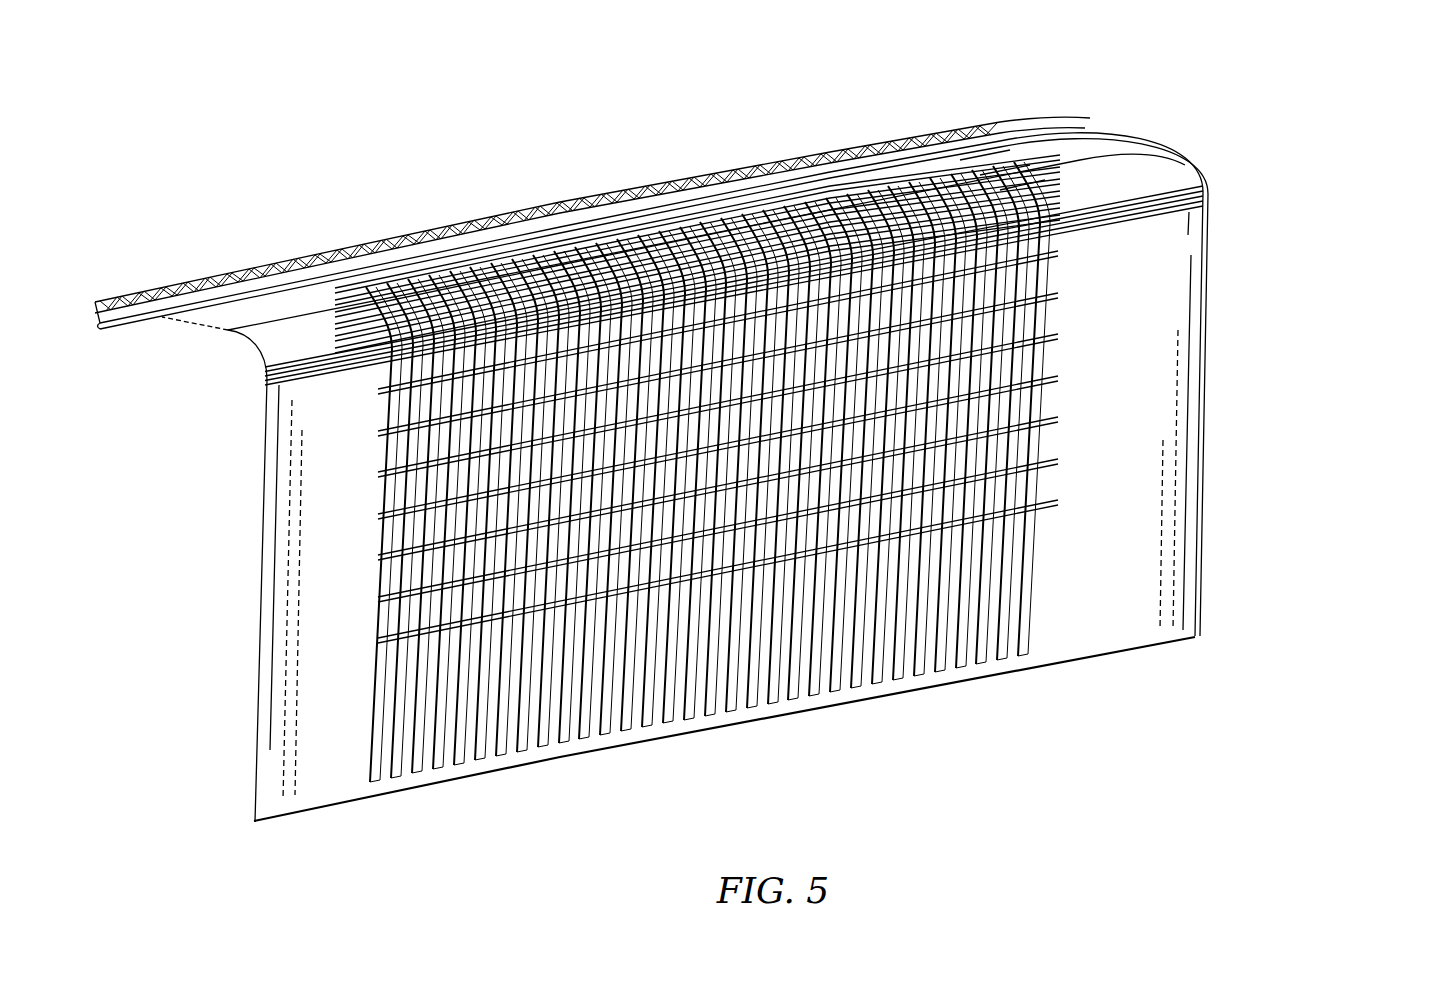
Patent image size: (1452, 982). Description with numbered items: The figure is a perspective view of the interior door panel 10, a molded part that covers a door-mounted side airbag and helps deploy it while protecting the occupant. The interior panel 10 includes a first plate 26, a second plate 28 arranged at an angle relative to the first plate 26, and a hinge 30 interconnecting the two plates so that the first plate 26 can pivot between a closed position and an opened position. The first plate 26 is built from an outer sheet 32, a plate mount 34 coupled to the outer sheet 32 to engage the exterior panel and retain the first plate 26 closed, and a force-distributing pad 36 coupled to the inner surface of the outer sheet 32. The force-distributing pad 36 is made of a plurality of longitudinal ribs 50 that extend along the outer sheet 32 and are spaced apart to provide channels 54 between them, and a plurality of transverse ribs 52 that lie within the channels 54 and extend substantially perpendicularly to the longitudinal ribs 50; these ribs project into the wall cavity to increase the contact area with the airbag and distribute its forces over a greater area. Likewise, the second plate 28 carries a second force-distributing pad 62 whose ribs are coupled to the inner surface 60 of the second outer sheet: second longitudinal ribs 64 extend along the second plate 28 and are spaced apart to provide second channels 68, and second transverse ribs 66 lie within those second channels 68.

The interior door panel 10 is at (1326, 88).
The first plate 26 is at (572, 172).
The second plate 28 is at (246, 607).
The hinge 30 is at (1214, 190).
The outer sheet 32 is at (262, 272).
The plate mount 34 is at (128, 325).
The force-distributing pad 36 is at (296, 330).
The longitudinal ribs 50 is at (806, 176).
The transverse ribs 52 is at (1033, 168).
The first plurality of channels 54 is at (905, 157).
The inner surface of the second outer sheet 60 is at (338, 790).
The second force-distributing pad 62 is at (1075, 572).
The second plurality of longitudinal ribs 64 is at (993, 665).
The second plurality of transverse ribs 66 is at (1062, 494).
The second plurality of channels 68 is at (857, 699).